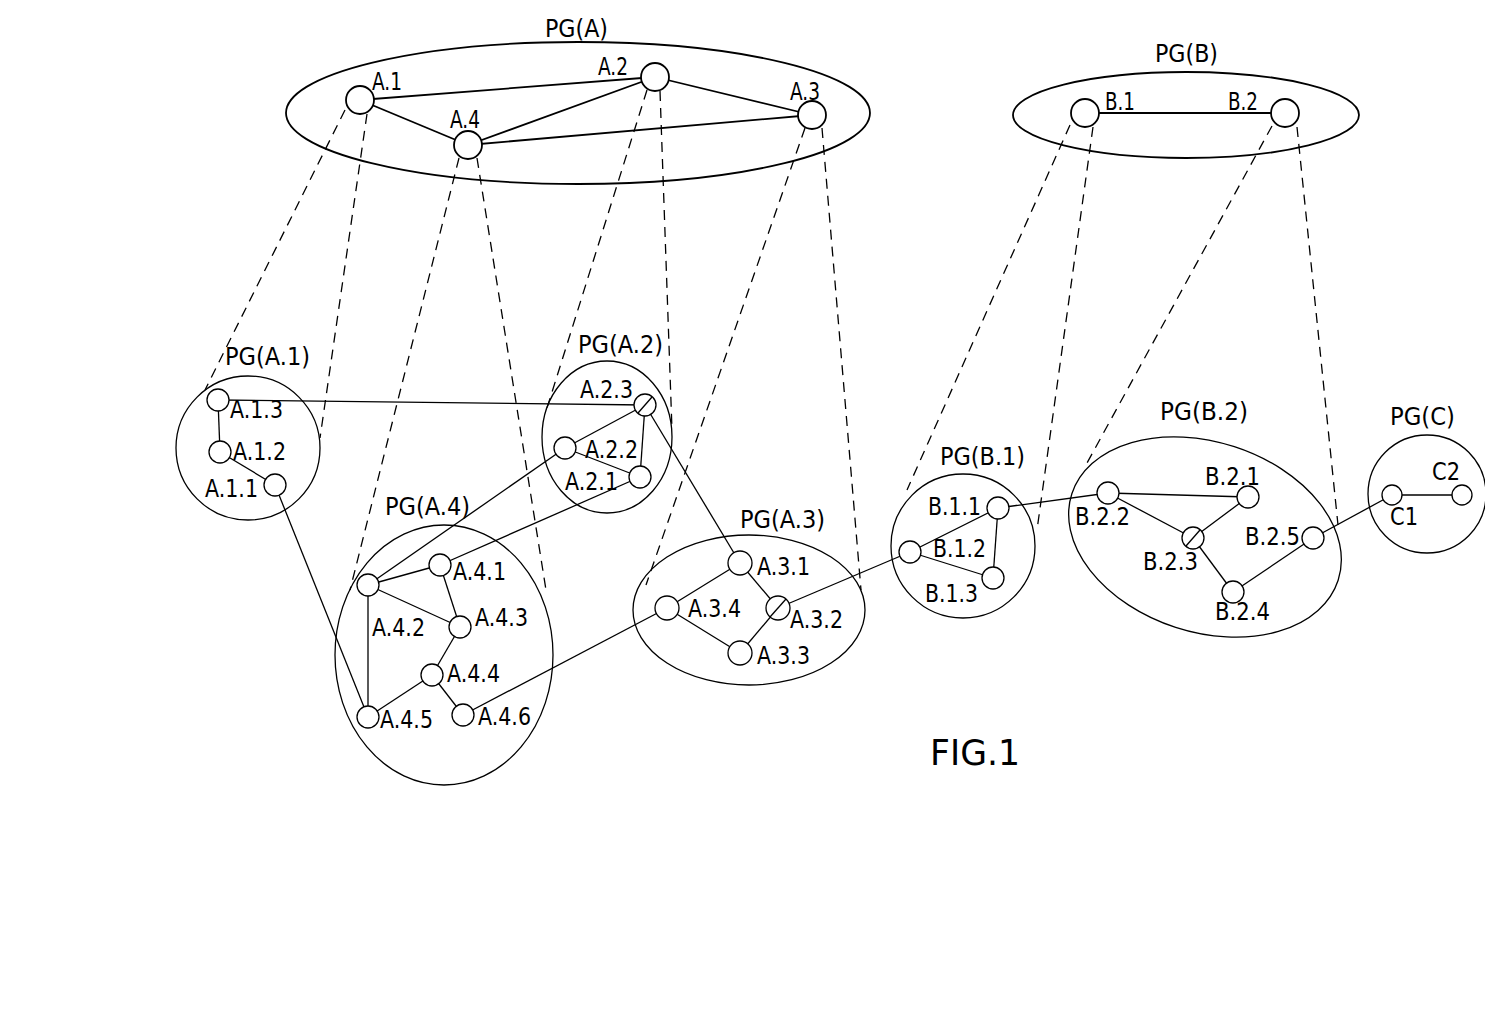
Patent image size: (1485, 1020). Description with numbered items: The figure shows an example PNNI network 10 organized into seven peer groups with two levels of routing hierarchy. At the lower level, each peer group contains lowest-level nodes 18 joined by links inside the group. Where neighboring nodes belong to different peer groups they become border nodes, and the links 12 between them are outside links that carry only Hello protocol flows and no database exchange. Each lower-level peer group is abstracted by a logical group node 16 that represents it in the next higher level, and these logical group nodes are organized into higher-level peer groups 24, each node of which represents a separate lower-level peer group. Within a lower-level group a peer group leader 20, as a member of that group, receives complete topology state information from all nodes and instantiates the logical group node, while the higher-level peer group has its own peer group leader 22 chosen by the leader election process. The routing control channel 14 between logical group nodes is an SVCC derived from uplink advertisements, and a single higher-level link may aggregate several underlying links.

The PNNI network 10 is at (278, 652).
The outside links 12 is at (703, 500).
The routing control channel 14 is at (578, 82).
The logical group nodes 16 is at (350, 90).
The nodes 18 is at (212, 462).
The peer group leader 20 is at (208, 392).
The peer group leader 22 is at (1074, 100).
The peer groups 24 is at (756, 54).